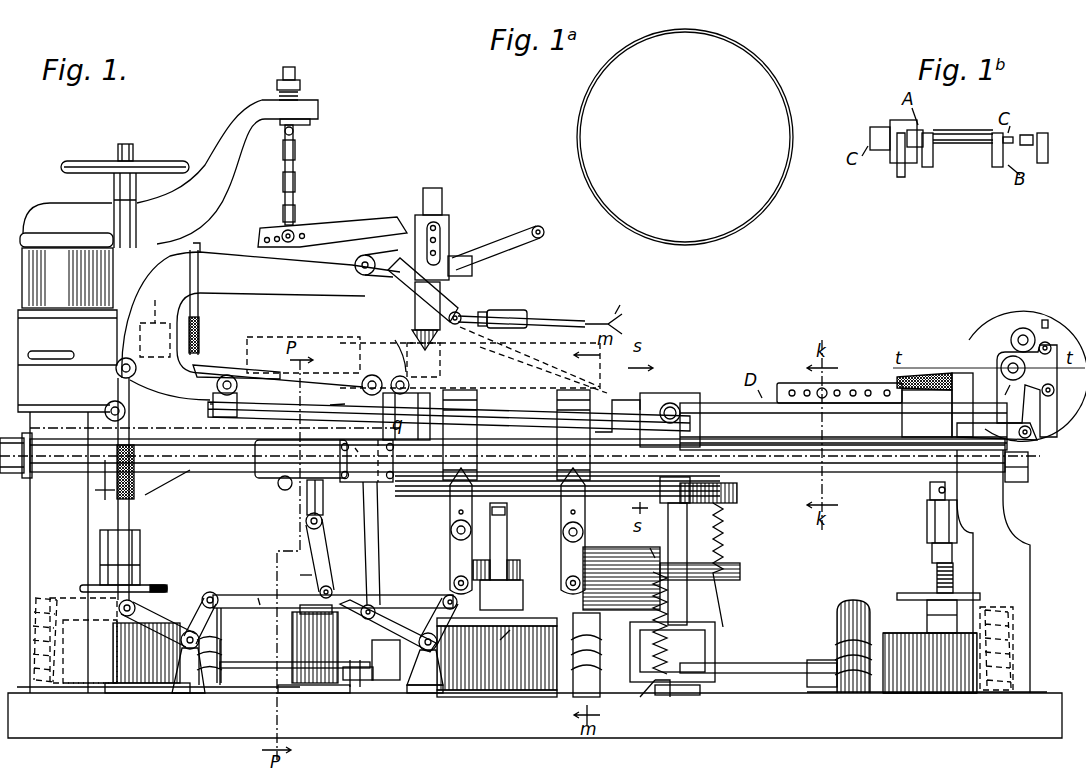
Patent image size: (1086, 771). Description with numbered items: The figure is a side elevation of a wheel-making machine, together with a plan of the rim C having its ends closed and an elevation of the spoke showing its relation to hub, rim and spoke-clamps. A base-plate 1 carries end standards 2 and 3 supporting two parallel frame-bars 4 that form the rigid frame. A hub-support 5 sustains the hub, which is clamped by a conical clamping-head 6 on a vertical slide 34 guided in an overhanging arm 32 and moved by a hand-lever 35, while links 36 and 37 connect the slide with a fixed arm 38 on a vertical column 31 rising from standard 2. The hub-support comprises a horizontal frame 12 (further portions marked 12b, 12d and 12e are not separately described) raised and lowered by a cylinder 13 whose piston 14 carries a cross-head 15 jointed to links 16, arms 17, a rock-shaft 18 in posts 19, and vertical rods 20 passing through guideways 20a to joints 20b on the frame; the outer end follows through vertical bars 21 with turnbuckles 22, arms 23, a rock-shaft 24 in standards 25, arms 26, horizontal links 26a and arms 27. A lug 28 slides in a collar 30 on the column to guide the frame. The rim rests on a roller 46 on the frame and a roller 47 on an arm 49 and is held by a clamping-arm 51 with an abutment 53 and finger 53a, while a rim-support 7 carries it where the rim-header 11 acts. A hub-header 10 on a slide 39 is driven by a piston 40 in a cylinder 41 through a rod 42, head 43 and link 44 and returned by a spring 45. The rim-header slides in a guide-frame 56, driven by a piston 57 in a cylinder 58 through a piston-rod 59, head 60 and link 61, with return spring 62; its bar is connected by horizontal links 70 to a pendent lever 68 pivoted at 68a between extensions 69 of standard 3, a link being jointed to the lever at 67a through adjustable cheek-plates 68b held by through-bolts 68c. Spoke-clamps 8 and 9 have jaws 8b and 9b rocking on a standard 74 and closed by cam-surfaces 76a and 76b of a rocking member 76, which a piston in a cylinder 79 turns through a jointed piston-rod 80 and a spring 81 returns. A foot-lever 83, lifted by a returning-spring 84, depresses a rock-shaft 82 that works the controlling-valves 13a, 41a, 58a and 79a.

In FIG. 1, the base-plate 1 is at (535, 712).
In FIG. 1, the standard 2 is at (67, 552).
In FIG. 1, the standard 3 is at (993, 571).
In FIG. 1, the frame-bars 4 is at (214, 465).
In FIG. 1, the hub-support 5 is at (397, 375).
In FIG. 1, the clamping-head 6 is at (424, 304).
In FIG. 1, the rim-support 7 is at (615, 398).
In FIG. 1, the spoke-clamp 8 is at (557, 402).
In FIG. 1B, the spoke-clamp 8 is at (991, 161).
In FIG. 1, the jaw 8b is at (585, 514).
In FIG. 1, the spoke-clamp 9 is at (477, 402).
In FIG. 1B, the spoke-clamp 9 is at (928, 168).
In FIG. 1, the jaw 9b is at (450, 548).
In FIG. 1, the hub-header 10 is at (557, 469).
In FIG. 1B, the hub-header 10 is at (897, 172).
In FIG. 1, the rim-header 11 is at (640, 400).
In FIG. 1B, the rim-header 11 is at (1030, 134).
In FIG. 1, the hub-supporting frame 12 is at (607, 393).
In FIG. 1, the link rod 12b is at (507, 360).
In FIG. 1, the link rod 12d is at (470, 366).
In FIG. 1, the inclined bar portion 12e is at (342, 400).
In FIG. 1, the cylinder 13 is at (314, 649).
In FIG. 1, the controlling-valve 13a is at (372, 660).
In FIG. 1, the piston 14 is at (292, 576).
In FIG. 1, the cross-head 15 is at (328, 498).
In FIG. 1, the links 16 is at (330, 555).
In FIG. 1, the arms 17 is at (388, 626).
In FIG. 1, the rock-shaft 18 is at (425, 632).
In FIG. 1, the posts 19 is at (424, 690).
In FIG. 1, the vertical rods 20 is at (378, 534).
In FIG. 1, the guideways 20a is at (358, 459).
In FIG. 1, the joint 20b is at (368, 376).
In FIG. 1, the vertical bars 21 is at (105, 380).
In FIG. 1, the turnbuckle 22 is at (136, 515).
In FIG. 1, the arms 23 is at (158, 622).
In FIG. 1, the rock-shaft 24 is at (193, 598).
In FIG. 1, the standards 25 is at (187, 693).
In FIG. 1, the arms 26 is at (215, 620).
In FIG. 1, the horizontal links 26a is at (254, 590).
In FIG. 1, the arms 27 is at (497, 657).
In FIG. 1, the lug or block 28 is at (155, 324).
In FIG. 1, the collar or sleeve 30 is at (67, 361).
In FIG. 1, the vertical column 31 is at (67, 278).
In FIG. 1, the arm 32 is at (261, 326).
In FIG. 1, the vertical slide 34 is at (443, 203).
In FIG. 1, the hand-lever 35 is at (484, 252).
In FIG. 1, the link 36 is at (332, 237).
In FIG. 1, the link 37 is at (302, 175).
In FIG. 1, the fixed arm 38 is at (169, 157).
In FIG. 1, the slide 39 is at (268, 478).
In FIG. 1, the piston 40 is at (115, 640).
In FIG. 1, the cylinder 41 is at (95, 690).
In FIG. 1, the controlling-valve 41a is at (229, 646).
In FIG. 1, the piston-rod 42 is at (100, 575).
In FIG. 1, the head 43 is at (95, 490).
In FIG. 1, the link 44 is at (167, 487).
In FIG. 1, the spring 45 is at (34, 626).
In FIG. 1, the supporting-roller 46 is at (212, 363).
In FIG. 1, the supporting-roller 47 is at (406, 416).
In FIG. 1, the arm 49 is at (395, 340).
In FIG. 1, the clamping-arm 51 is at (556, 320).
In FIG. 1, the shoulder or abutment 53 is at (622, 326).
In FIG. 1, the horizontal finger 53a is at (633, 298).
In FIG. 1, the guide-frame 56 is at (737, 498).
In FIG. 1, the piston 57 is at (930, 651).
In FIG. 1, the cylinder 58 is at (920, 690).
In FIG. 1, the controlling-valve 58a is at (840, 624).
In FIG. 1, the piston-rod 59 is at (937, 574).
In FIG. 1, the head 60 is at (928, 531).
In FIG. 1, the link 61 is at (930, 488).
In FIG. 1, the spring 62 is at (1015, 636).
In FIG. 1, the joint 67a is at (1016, 397).
In FIG. 1, the pendent lever 68 is at (1040, 391).
In FIG. 1, the pivot 68a is at (1026, 328).
In FIG. 1, the cheek-plates 68b is at (1032, 368).
In FIG. 1, the through-bolts 68c is at (1052, 340).
In FIG. 1, the extensions 69 is at (1027, 376).
In FIG. 1, the horizontal links 70 is at (922, 432).
In FIG. 1, the standard 74 is at (507, 532).
In FIG. 1, the rocking member 76 is at (620, 560).
In FIG. 1, the cam-surface 76a is at (659, 542).
In FIG. 1, the cam-surface 76b is at (642, 623).
In FIG. 1, the cylinder 79 is at (503, 632).
In FIG. 1, the controlling-valve 79a is at (586, 655).
In FIG. 1, the jointed piston-rod 80 is at (523, 600).
In FIG. 1, the spring 81 is at (652, 695).
In FIG. 1, the rock-shaft 82 is at (248, 690).
In FIG. 1, the foot-lever 83 is at (708, 625).
In FIG. 1, the returning-spring 84 is at (723, 535).
In FIG. 1A, the rim C is at (685, 137).